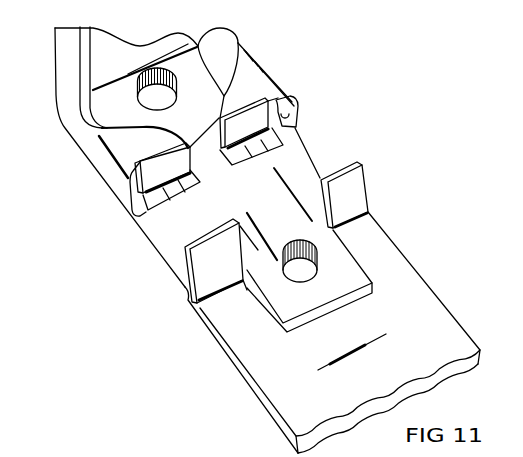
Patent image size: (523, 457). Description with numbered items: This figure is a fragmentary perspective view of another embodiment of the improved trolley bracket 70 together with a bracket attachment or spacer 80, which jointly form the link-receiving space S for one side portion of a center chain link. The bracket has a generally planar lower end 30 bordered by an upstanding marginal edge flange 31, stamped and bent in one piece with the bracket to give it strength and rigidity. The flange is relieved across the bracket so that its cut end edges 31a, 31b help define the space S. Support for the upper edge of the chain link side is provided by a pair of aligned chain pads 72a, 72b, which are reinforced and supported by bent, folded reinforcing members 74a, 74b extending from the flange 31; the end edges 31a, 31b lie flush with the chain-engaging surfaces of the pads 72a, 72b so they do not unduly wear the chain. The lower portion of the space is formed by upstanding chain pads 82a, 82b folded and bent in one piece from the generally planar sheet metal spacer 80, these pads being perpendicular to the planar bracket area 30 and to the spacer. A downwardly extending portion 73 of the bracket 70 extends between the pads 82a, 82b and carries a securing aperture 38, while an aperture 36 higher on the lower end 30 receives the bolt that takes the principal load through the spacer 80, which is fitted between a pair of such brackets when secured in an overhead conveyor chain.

The lower end 30 is at (197, 73).
The marginal edge flange 31 is at (86, 70).
The end edge of flange 31a is at (291, 112).
The end edge of flange 31b is at (130, 197).
The aperture 36 is at (150, 97).
The aperture 38 is at (318, 268).
The trolley bracket 70 is at (312, 81).
The chain pad 72a is at (224, 145).
The chain pad 72b is at (175, 160).
The downwardly extending portion 73 is at (293, 302).
The reinforcing member 74a is at (245, 88).
The reinforcing member 74b is at (150, 147).
The bracket attachment 80 is at (426, 281).
The chain pad 82a is at (364, 208).
The chain pad 82b is at (240, 274).
The link-receiving space S is at (323, 138).